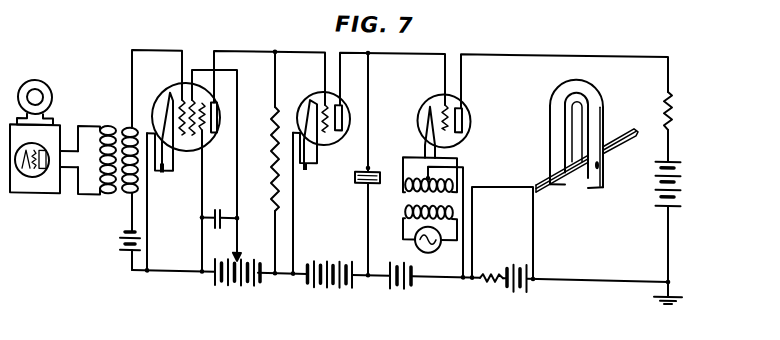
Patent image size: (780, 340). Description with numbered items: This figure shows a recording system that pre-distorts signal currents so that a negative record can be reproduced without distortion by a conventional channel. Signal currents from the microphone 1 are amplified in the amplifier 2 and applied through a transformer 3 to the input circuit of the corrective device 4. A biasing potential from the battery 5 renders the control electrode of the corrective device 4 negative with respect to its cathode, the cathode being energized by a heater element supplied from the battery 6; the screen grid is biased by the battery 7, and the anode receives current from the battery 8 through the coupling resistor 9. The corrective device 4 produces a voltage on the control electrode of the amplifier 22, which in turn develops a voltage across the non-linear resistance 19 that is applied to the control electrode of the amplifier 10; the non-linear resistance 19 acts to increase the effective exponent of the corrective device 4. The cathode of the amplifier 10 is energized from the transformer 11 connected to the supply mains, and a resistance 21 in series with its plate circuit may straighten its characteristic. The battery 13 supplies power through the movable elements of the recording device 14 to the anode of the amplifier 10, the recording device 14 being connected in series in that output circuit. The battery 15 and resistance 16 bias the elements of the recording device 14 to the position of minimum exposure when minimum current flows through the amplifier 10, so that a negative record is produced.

The microphone 1 is at (47, 87).
The amplifier 2 is at (22, 199).
The transformer 3 is at (117, 200).
The corrective device 4 is at (183, 121).
The battery 5 is at (117, 248).
The battery 6 is at (162, 176).
The battery 7 is at (218, 288).
The battery 8 is at (255, 291).
The coupling resistor 9 is at (265, 161).
The amplifier 10 is at (433, 92).
The transformer 11 is at (398, 193).
The battery 13 is at (682, 180).
The recording device 14 is at (587, 136).
The battery 15 is at (522, 284).
The variable resistor 16 is at (497, 277).
The non-linear resistance 19 is at (373, 163).
The resistance 21 is at (672, 100).
The amplifier 22 is at (317, 92).